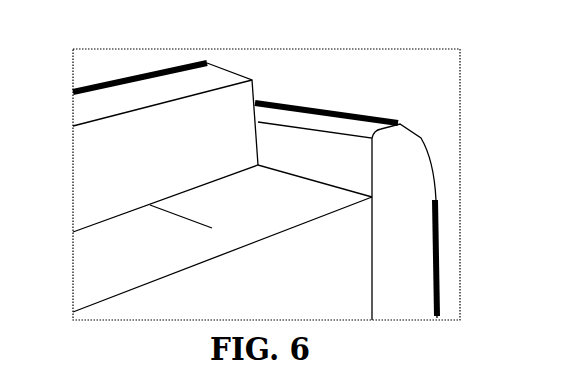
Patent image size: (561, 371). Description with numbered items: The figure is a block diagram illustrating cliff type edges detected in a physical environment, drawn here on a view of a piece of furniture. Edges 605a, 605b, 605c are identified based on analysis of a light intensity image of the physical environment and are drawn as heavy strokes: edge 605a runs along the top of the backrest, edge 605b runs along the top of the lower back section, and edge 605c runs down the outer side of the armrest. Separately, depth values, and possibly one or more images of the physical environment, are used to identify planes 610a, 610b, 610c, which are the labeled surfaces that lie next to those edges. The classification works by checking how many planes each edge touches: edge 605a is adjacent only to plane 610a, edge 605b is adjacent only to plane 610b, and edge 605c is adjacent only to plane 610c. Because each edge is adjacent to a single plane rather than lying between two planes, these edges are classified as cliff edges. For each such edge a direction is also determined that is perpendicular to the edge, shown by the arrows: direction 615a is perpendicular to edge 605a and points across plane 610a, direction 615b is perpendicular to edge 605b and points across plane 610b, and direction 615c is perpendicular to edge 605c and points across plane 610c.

The edge 605a is at (177, 70).
The edge 605b is at (378, 119).
The edge 605c is at (437, 225).
The plane 610a is at (162, 94).
The plane 610b is at (326, 120).
The plane 610c is at (404, 222).
The direction 615a is at (143, 113).
The direction 615b is at (317, 142).
The direction 615c is at (399, 280).